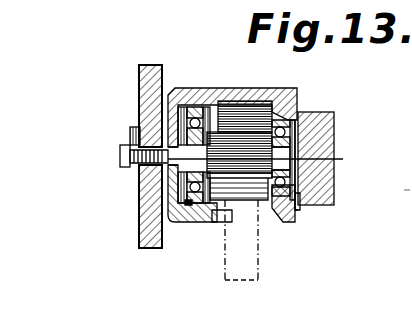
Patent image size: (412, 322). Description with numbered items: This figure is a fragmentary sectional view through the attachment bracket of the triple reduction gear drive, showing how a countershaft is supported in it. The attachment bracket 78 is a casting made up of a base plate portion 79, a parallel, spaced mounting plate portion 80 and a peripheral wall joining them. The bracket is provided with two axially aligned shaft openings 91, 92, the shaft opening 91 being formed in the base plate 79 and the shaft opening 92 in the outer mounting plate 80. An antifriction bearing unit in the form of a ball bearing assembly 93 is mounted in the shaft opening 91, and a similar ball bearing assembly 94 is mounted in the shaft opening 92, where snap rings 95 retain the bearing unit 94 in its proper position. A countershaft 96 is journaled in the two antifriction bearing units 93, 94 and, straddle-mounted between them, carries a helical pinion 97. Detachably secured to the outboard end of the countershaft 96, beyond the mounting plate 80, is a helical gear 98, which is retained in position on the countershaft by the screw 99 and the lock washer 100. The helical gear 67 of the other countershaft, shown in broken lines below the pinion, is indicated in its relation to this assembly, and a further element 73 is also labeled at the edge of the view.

The plate 98 is at (145, 64).
The nut 100 is at (129, 130).
The bolt 99 is at (119, 153).
The housing 78 is at (245, 83).
The bearing race 92 is at (186, 105).
The ball bearing 94 is at (205, 105).
The block 91 is at (298, 106).
The gear 97 is at (247, 172).
The shaft 96 is at (265, 160).
The nut 79 is at (285, 223).
The washer 93 is at (299, 212).
The housing lower wall 80 is at (189, 223).
The retainer 95 is at (209, 222).
The shaft 67 is at (260, 272).
The member 73 is at (407, 191).